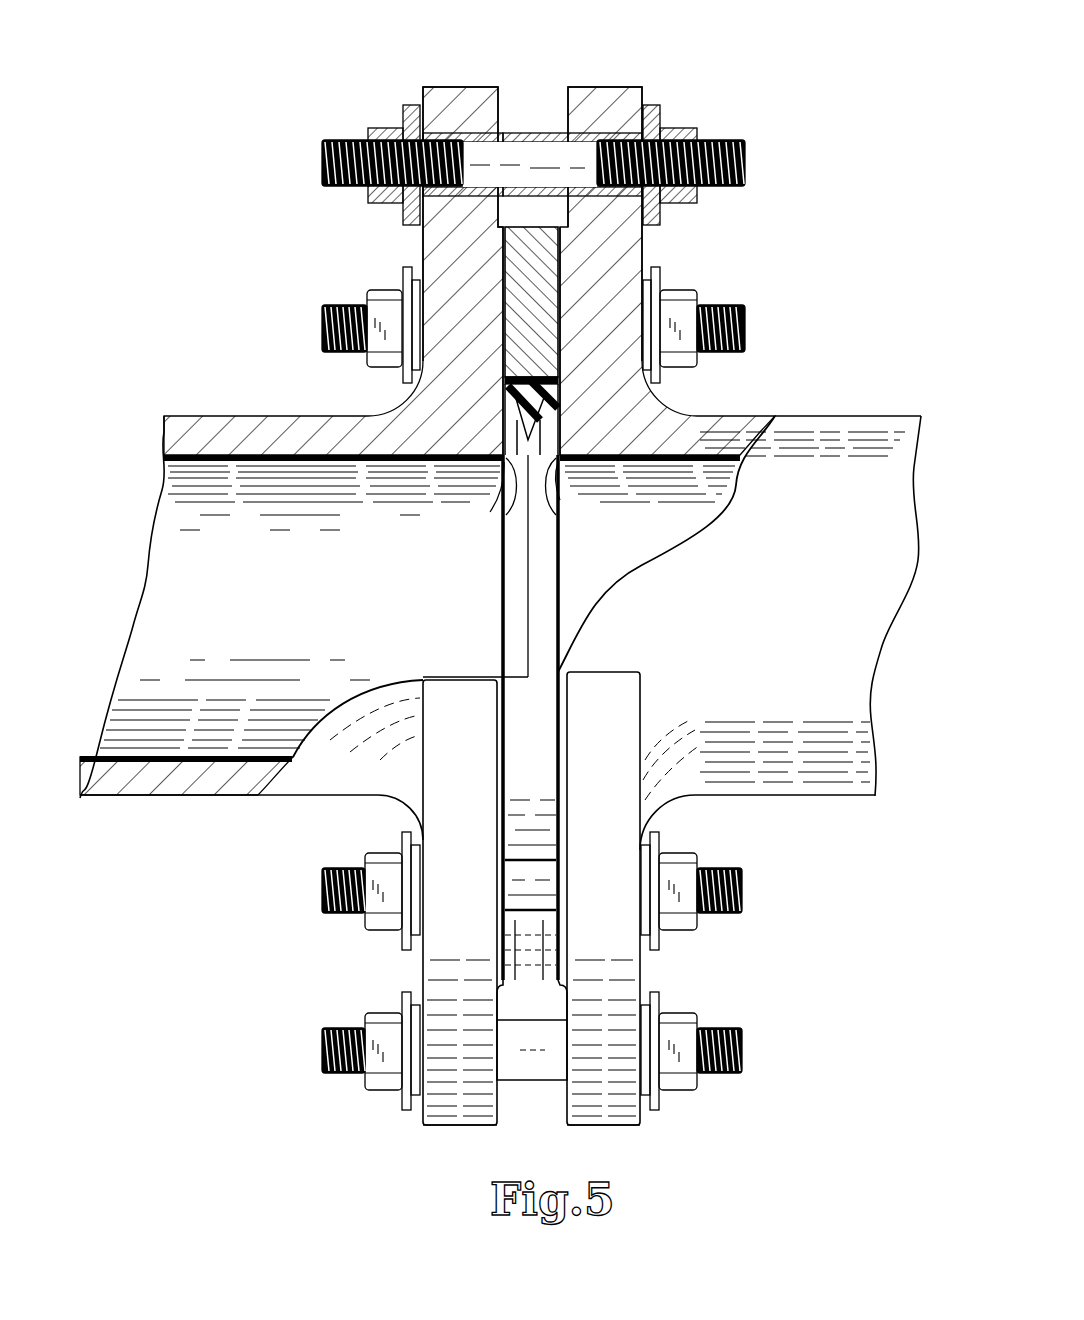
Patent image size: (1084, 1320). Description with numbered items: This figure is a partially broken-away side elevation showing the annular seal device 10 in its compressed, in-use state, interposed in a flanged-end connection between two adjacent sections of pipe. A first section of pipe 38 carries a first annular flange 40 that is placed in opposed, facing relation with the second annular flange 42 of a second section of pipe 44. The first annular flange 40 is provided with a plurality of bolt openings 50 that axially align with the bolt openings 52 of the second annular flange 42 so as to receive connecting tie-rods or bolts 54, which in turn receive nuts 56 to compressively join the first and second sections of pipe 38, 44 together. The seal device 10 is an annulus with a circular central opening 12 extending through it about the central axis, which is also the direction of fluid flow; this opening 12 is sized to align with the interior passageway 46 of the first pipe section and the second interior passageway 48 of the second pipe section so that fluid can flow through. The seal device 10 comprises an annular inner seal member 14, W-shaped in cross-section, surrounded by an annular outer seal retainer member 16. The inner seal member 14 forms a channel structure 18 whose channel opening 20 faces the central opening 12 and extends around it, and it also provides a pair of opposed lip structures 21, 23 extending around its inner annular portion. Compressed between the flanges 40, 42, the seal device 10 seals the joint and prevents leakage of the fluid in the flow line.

The annular seal device 10 is at (530, 766).
The circular central opening 12 is at (528, 566).
The annular inner seal member 14 is at (566, 409).
The annular outer seal retainer member 16 is at (505, 300).
The channel structure 18 is at (543, 554).
The channel opening 20 is at (556, 505).
The lip structure 21 is at (505, 462).
The lip structure 23 is at (538, 458).
The first section of pipe 38 is at (262, 418).
The first annular flange 40 is at (435, 240).
The second annular flange 42 is at (640, 250).
The second section of pipe 44 is at (805, 418).
The interior passageway 46 is at (195, 542).
The second interior passageway 48 is at (708, 485).
The bolt openings 50 is at (470, 125).
The bolt openings 52 is at (600, 128).
The bolts 54 is at (745, 160).
The nuts 56 is at (385, 128).